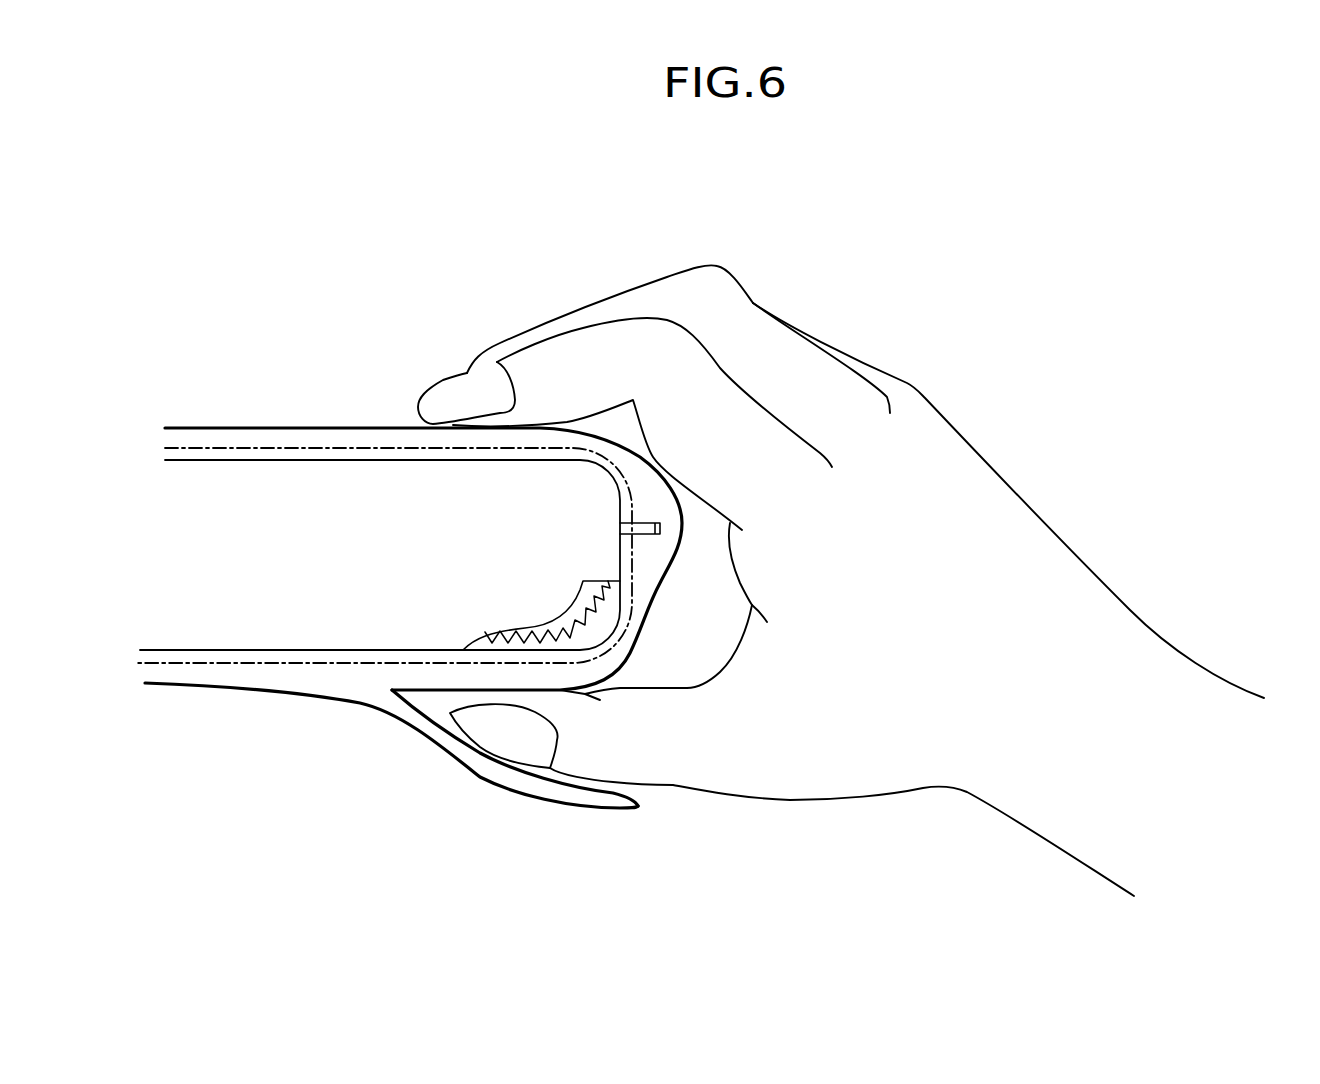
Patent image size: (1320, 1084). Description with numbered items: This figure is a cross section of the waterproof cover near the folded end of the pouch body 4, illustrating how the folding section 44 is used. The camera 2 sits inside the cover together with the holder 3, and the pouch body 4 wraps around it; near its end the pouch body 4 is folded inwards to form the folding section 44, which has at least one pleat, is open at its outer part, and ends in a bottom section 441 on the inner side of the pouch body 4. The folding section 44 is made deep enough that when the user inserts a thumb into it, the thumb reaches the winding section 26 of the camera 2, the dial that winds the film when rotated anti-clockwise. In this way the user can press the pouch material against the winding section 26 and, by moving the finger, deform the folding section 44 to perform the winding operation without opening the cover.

The camera 2 is at (204, 430).
The holder 3 is at (271, 447).
The pouch body 4 is at (358, 400).
The winding section 26 is at (567, 625).
The folding section 44 is at (683, 810).
The bottom section 441 is at (393, 695).